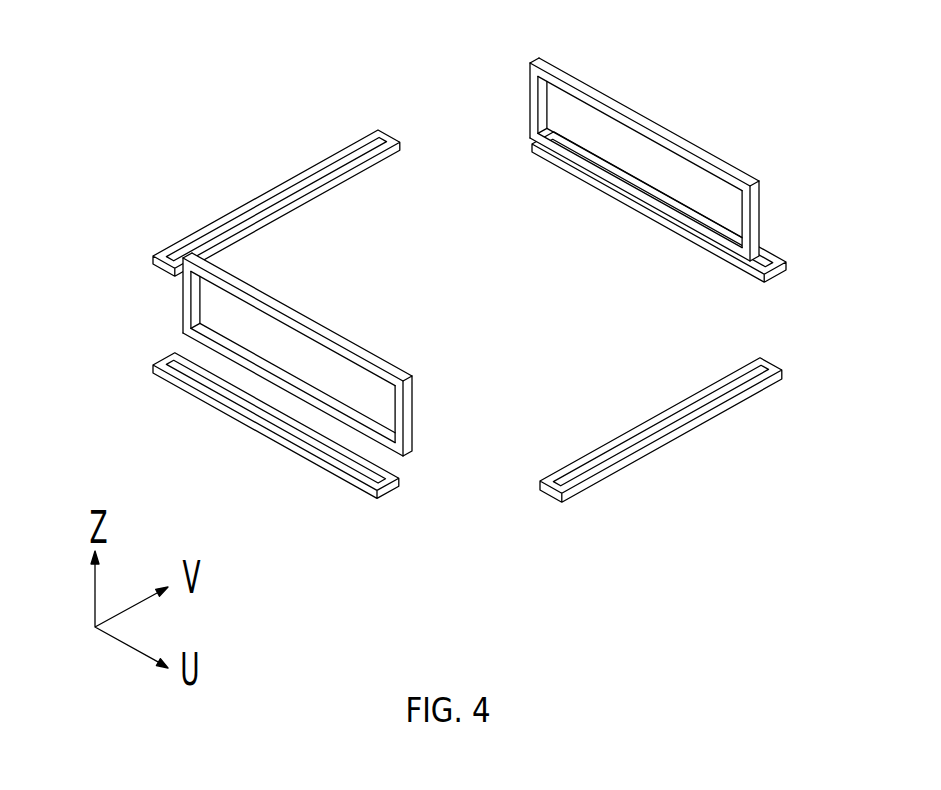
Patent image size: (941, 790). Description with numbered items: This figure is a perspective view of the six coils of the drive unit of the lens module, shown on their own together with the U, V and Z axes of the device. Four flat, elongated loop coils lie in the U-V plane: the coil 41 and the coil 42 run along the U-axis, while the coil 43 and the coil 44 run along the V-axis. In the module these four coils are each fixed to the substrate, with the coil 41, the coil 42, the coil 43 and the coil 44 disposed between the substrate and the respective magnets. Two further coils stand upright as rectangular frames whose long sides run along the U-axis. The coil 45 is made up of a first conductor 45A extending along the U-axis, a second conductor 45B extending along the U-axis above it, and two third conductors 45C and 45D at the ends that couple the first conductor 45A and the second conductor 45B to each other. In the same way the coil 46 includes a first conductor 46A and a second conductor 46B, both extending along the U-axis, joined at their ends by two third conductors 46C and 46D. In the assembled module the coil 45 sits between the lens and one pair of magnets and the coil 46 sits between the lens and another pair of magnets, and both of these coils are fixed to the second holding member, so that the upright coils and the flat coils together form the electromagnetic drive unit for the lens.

The coil 41 is at (255, 428).
The coil 42 is at (642, 213).
The coil 43 is at (261, 196).
The coil 44 is at (698, 427).
The coil 45 is at (299, 349).
The first conductor 45A is at (345, 414).
The second conductor 45B is at (319, 324).
The third conductor 45C is at (412, 424).
The third conductor 45D is at (183, 300).
The coil 46 is at (667, 148).
The first conductor 46A is at (701, 220).
The second conductor 46B is at (668, 129).
The third conductor 46C is at (530, 101).
The third conductor 46D is at (760, 223).